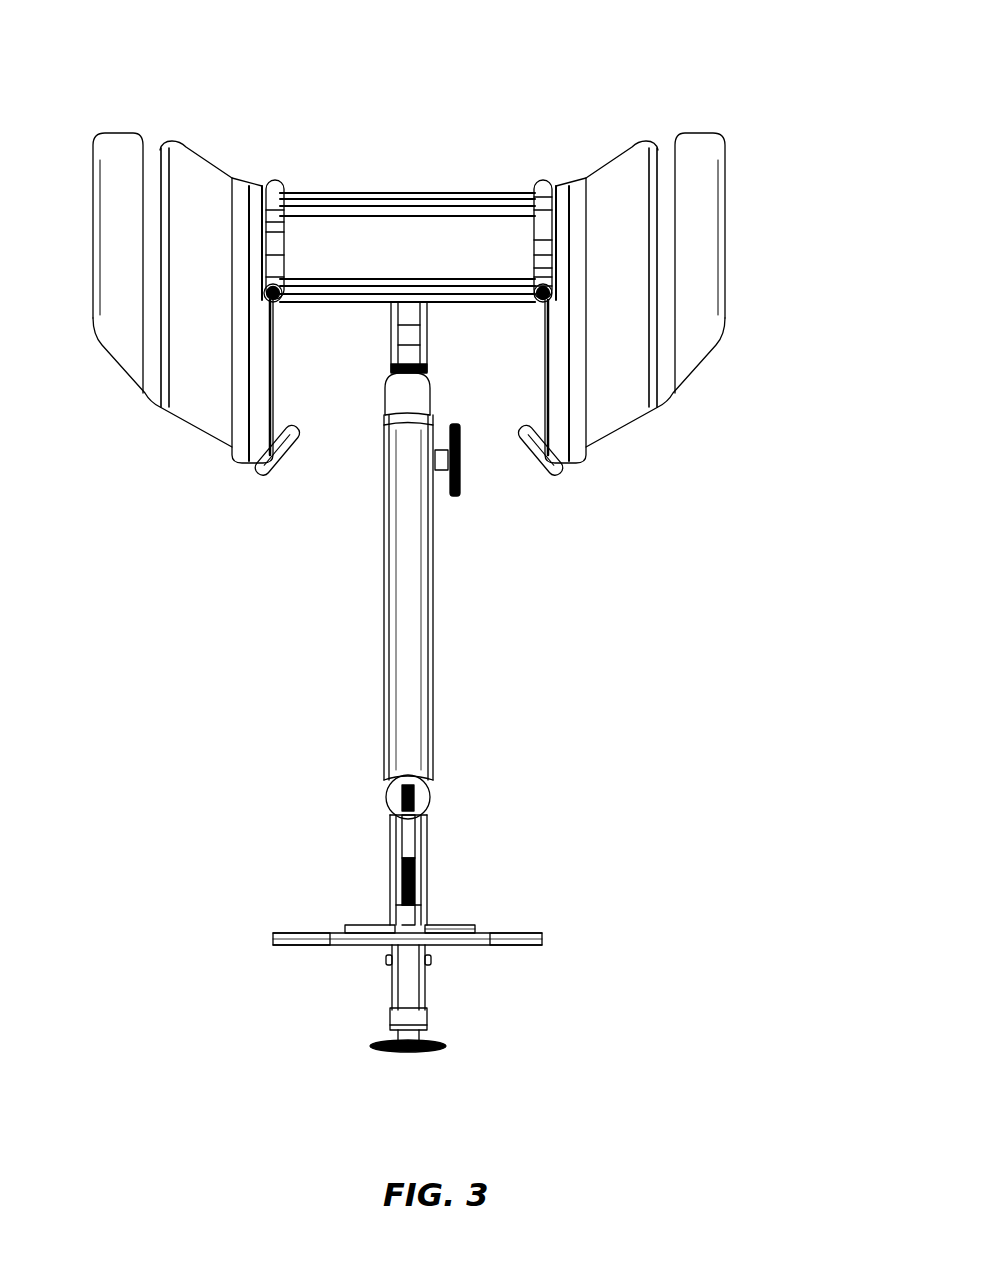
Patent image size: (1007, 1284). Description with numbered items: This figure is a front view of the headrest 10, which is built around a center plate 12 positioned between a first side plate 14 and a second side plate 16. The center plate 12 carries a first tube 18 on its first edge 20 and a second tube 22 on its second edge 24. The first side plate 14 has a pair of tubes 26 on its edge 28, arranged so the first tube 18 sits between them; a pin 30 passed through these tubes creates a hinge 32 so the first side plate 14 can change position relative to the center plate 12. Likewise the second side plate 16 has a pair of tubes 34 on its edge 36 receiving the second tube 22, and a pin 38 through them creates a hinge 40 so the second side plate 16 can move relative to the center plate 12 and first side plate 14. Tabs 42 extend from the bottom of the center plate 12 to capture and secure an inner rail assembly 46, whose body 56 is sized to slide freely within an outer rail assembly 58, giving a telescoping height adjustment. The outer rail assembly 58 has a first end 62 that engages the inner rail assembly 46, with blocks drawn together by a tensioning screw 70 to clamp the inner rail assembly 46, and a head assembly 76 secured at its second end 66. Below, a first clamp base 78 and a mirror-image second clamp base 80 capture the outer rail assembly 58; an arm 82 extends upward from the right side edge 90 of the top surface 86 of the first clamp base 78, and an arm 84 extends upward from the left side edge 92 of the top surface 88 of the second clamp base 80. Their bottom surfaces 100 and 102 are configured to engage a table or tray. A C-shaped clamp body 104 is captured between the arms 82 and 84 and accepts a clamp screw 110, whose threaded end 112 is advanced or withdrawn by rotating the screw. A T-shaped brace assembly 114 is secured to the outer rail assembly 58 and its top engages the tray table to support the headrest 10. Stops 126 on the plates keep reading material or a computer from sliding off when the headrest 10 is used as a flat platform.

The headrest 10 is at (194, 68).
The center plate 12 is at (442, 235).
The first side plate 14 is at (133, 265).
The second side plate 16 is at (700, 170).
The first tube 18 is at (275, 230).
The first edge 20 is at (290, 222).
The second tube 22 is at (543, 235).
The second edge 24 is at (537, 242).
The pair of tubes 26 is at (275, 192).
The edge 28 is at (270, 293).
The pin 30 is at (275, 296).
The hinge 32 is at (275, 185).
The pair of tubes 34 is at (550, 187).
The edge 36 is at (548, 268).
The pin 38 is at (550, 300).
The hinge 40 is at (543, 183).
The tab 42 is at (397, 335).
The inner rail assembly 46 is at (392, 375).
The body 56 is at (458, 492).
The outer rail assembly 58 is at (420, 615).
The first end 62 is at (410, 450).
The second end 66 is at (400, 768).
The tensioning screw 70 is at (428, 395).
The head assembly 76 is at (393, 827).
The first clamp base 78 is at (300, 933).
The second clamp base 80 is at (523, 933).
The arm 82 is at (390, 853).
The arm 84 is at (425, 830).
The top surface 86 is at (320, 935).
The top surface 88 is at (480, 933).
The right side edge 90 is at (390, 927).
The left side edge 92 is at (420, 926).
The bottom surface 100 is at (335, 945).
The bottom surface 102 is at (515, 950).
The clamp body 104 is at (410, 987).
The clamp screw 110 is at (398, 1052).
The threaded end 112 is at (395, 960).
The brace assembly 114 is at (460, 927).
The stops 126 is at (263, 468).